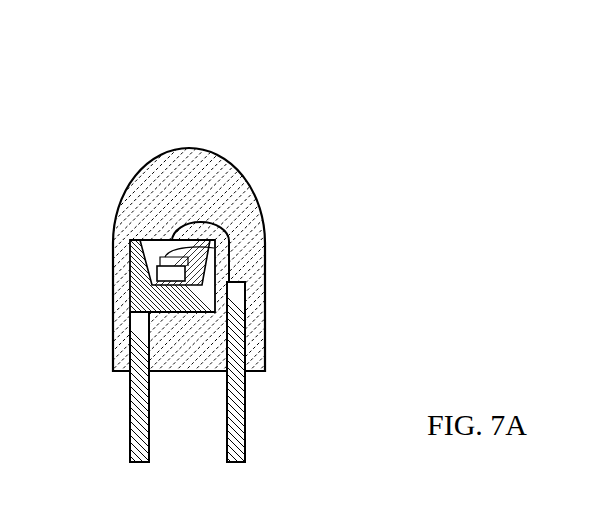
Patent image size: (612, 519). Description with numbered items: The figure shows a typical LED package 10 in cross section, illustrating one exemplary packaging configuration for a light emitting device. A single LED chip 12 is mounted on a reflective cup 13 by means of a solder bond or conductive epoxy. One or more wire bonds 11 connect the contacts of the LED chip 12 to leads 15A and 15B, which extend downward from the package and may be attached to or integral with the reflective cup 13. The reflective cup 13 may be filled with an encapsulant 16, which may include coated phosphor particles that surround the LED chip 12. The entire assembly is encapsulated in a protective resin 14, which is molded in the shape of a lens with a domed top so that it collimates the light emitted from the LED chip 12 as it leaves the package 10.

The LED package 10 is at (258, 313).
The wire bond 11 is at (230, 251).
The LED chip 12 is at (160, 266).
The reflective cup 13 is at (148, 302).
The protective resin 14 is at (207, 152).
The lead 15A is at (130, 402).
The lead 15B is at (245, 402).
The encapsulant 16 is at (156, 272).